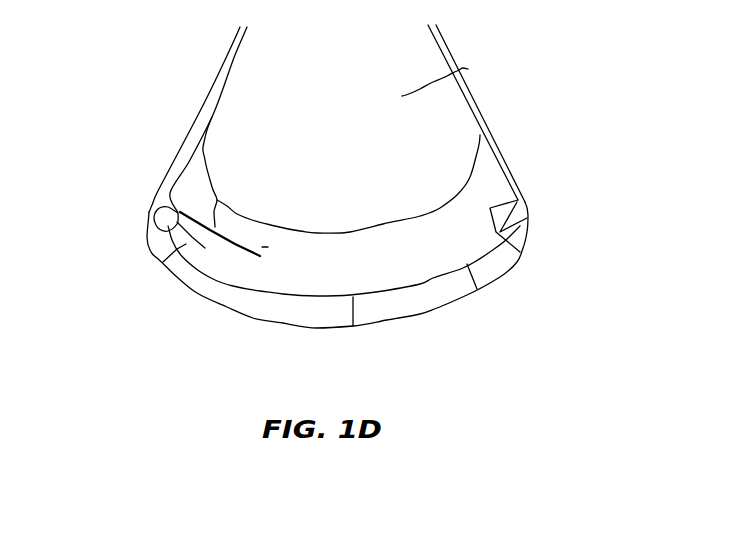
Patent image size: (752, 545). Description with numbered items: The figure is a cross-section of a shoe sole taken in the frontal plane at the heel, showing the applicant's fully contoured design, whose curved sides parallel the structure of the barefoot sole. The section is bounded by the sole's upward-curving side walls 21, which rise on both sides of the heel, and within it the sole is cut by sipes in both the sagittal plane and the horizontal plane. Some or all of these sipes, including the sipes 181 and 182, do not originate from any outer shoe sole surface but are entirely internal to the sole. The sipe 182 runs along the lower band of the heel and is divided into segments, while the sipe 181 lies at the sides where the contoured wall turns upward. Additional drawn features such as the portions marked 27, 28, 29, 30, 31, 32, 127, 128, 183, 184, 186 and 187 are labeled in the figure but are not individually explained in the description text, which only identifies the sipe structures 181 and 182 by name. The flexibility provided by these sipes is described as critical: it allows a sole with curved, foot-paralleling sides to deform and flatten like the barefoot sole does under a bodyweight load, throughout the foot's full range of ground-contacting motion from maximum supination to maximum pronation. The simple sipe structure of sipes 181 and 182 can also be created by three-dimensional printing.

The temple arm 21 is at (221, 68).
The hinge portion 27 is at (468, 70).
The lens 28 is at (333, 267).
The rim 29 is at (214, 117).
The rim groove 30 is at (262, 220).
The bottom portion 31 is at (297, 327).
The connector 32 is at (206, 160).
The lens edge 127 is at (387, 253).
The band 128 is at (250, 297).
The sipe 181 is at (157, 195).
The sipe 182 is at (225, 203).
The clip 183 is at (152, 230).
The cross bar 184 is at (220, 194).
The tab 186 is at (168, 265).
The fastener 187 is at (493, 263).